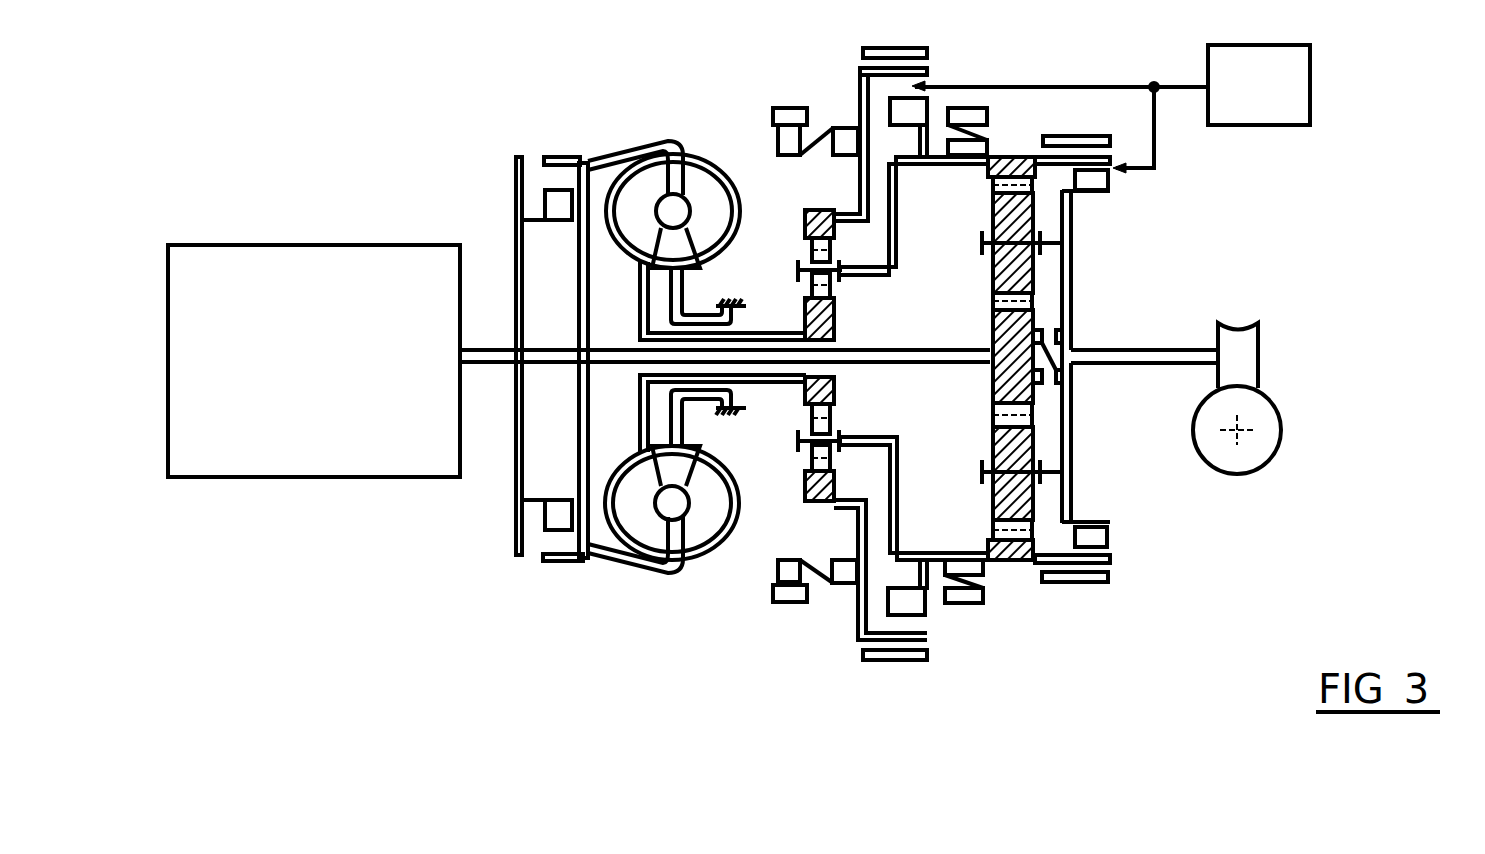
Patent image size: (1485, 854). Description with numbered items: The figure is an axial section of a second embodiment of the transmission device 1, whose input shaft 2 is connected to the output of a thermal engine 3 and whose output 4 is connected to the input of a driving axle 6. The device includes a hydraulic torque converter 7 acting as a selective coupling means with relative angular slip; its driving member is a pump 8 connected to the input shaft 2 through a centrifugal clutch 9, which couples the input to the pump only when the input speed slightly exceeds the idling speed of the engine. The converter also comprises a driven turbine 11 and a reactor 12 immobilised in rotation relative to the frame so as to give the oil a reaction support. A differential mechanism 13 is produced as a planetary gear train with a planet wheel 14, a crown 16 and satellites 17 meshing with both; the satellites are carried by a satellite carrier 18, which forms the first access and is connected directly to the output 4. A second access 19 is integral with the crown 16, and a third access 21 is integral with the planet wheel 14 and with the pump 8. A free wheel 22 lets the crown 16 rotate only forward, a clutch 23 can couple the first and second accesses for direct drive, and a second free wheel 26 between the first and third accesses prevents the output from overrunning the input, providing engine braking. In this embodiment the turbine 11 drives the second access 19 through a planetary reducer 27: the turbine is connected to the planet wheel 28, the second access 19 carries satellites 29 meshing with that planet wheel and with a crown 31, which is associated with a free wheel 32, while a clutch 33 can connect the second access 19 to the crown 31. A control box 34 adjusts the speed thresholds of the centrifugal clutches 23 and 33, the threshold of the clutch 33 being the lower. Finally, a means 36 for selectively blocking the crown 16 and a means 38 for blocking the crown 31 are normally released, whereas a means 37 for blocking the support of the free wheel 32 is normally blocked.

The transmission device 1 is at (766, 674).
The input shaft 2 is at (490, 348).
The thermal engine 3 is at (330, 478).
The output 4 is at (1185, 350).
The driving axle 6 is at (1298, 428).
The hydraulic torque converter 7 is at (682, 588).
The pump 8 is at (718, 548).
The centrifugal clutch 9 is at (525, 563).
The turbine 11 is at (615, 543).
The reactor 12 is at (675, 462).
The differential mechanism 13 is at (1032, 612).
The planet wheel 14 is at (1040, 313).
The crown 16 is at (1022, 162).
The satellites 17 is at (1046, 253).
The satellite carrier 18 is at (1077, 309).
The second access 19 is at (895, 202).
The third access 21 is at (893, 342).
The free wheel 22 is at (967, 607).
The clutch 23 is at (1120, 546).
The second free wheel 26 is at (1052, 390).
The planetary reducer 27 is at (787, 200).
The planet wheel 28 is at (838, 385).
The satellites 29 is at (838, 263).
The crown 31 is at (806, 482).
The free wheel 32 is at (843, 588).
The clutch 33 is at (912, 628).
The control box 34 is at (1292, 135).
The means for selective blocking of the crown 36 is at (1092, 588).
The means for selective blocking of the support of the free wheel 37 is at (787, 600).
The means for selective blocking of the crown 38 is at (885, 663).